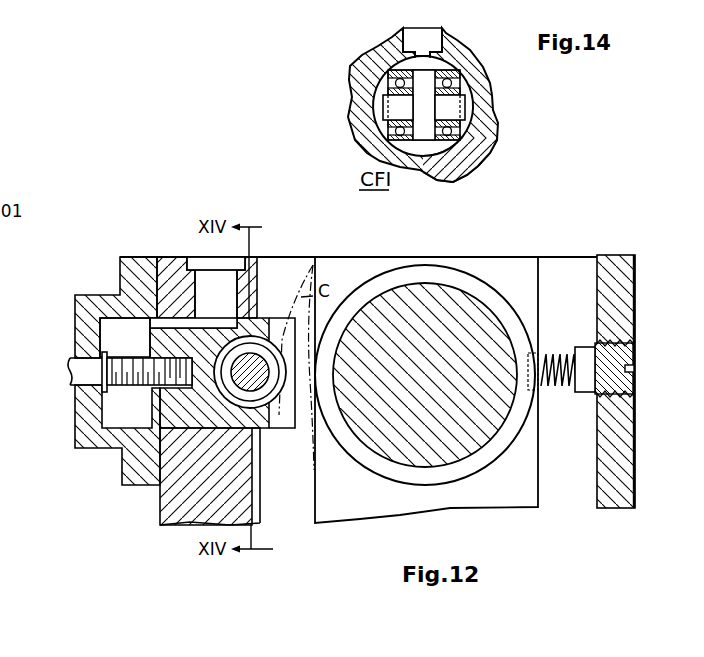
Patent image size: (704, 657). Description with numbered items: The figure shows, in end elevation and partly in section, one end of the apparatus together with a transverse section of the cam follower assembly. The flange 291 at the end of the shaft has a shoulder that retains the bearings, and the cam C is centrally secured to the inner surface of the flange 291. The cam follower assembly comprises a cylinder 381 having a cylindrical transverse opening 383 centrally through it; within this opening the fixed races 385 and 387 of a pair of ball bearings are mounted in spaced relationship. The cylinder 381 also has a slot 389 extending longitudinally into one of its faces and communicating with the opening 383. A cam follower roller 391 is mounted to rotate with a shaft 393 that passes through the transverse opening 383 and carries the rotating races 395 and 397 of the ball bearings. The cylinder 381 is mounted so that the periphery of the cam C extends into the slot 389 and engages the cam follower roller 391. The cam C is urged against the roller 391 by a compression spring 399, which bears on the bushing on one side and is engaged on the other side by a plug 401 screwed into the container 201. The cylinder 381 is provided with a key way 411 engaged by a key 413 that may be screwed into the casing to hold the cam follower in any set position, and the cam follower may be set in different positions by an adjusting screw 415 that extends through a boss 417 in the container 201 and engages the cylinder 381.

In FIG. 12, the container 201 is at (628, 440).
In FIG. 12, the flange 291 is at (480, 452).
In FIG. 14, the cylinder 381 is at (468, 102).
In FIG. 12, the cylinder 381 is at (160, 402).
In FIG. 14, the cylindrical transverse opening 383 is at (462, 76).
In FIG. 14, the fixed race 385 is at (386, 48).
In FIG. 14, the fixed race 387 is at (440, 70).
In FIG. 14, the slot 389 is at (478, 152).
In FIG. 14, the cam follower roller 391 is at (424, 92).
In FIG. 12, the cam follower roller 391 is at (259, 406).
In FIG. 14, the shaft 393 is at (383, 110).
In FIG. 14, the rotating race 395 is at (387, 86).
In FIG. 14, the rotating race 397 is at (466, 127).
In FIG. 12, the compression spring 399 is at (547, 389).
In FIG. 12, the plug 401 is at (634, 386).
In FIG. 12, the key way 411 is at (150, 327).
In FIG. 12, the key 413 is at (214, 263).
In FIG. 12, the adjusting screw 415 is at (142, 356).
In FIG. 12, the boss 417 is at (107, 298).